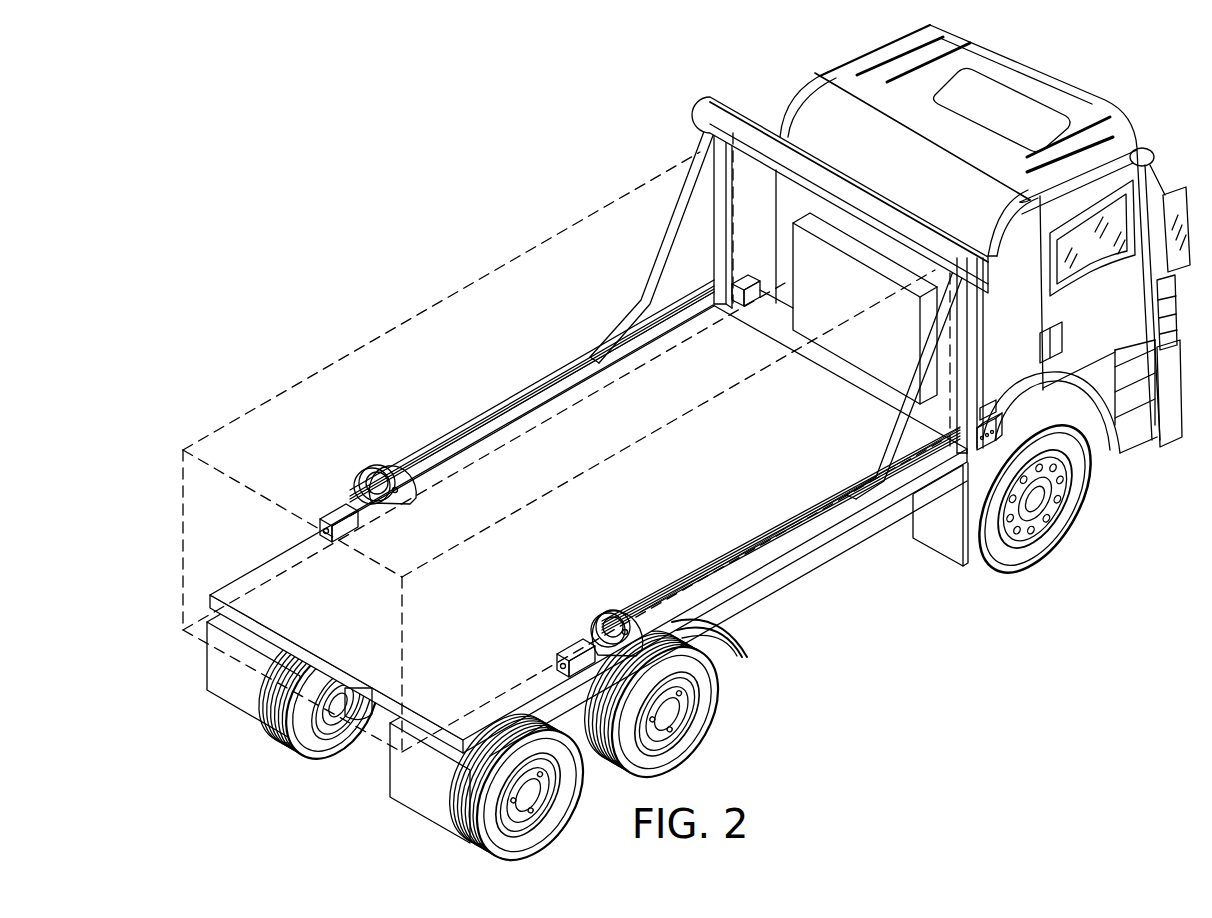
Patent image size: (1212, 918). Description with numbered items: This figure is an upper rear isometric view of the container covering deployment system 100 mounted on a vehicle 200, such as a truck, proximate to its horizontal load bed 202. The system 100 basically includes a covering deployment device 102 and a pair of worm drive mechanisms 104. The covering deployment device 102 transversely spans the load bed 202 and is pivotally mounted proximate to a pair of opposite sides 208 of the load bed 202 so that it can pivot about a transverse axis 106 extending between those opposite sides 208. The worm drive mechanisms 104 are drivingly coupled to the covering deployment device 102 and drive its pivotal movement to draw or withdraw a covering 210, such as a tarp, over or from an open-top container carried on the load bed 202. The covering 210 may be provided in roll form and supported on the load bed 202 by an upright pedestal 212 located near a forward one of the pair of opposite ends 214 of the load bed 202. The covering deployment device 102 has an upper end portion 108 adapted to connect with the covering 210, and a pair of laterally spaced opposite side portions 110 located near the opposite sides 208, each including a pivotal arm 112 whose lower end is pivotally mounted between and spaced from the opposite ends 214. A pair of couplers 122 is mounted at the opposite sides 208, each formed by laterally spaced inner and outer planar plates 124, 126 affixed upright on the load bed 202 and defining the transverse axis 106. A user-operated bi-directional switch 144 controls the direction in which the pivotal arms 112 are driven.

The container covering deployment system 100 is at (678, 181).
The covering deployment device 102 is at (641, 286).
The worm drive mechanisms 104 is at (417, 497).
The transverse axis 106 is at (520, 568).
The upper end portion 108 is at (986, 238).
The opposite side portions 110 is at (625, 353).
The pivotal arm 112 is at (565, 373).
The couplers 122 is at (494, 551).
The inner planar plate 124 is at (393, 505).
The outer planar plate 126 is at (372, 478).
The user-operated bi-directional switch 144 is at (736, 277).
The vehicle 200 is at (862, 51).
The load bed 202 is at (832, 543).
The opposite sides 208 is at (697, 306).
The covering 210 is at (856, 187).
The upright pedestal 212 is at (968, 323).
The opposite ends 214 is at (1000, 443).